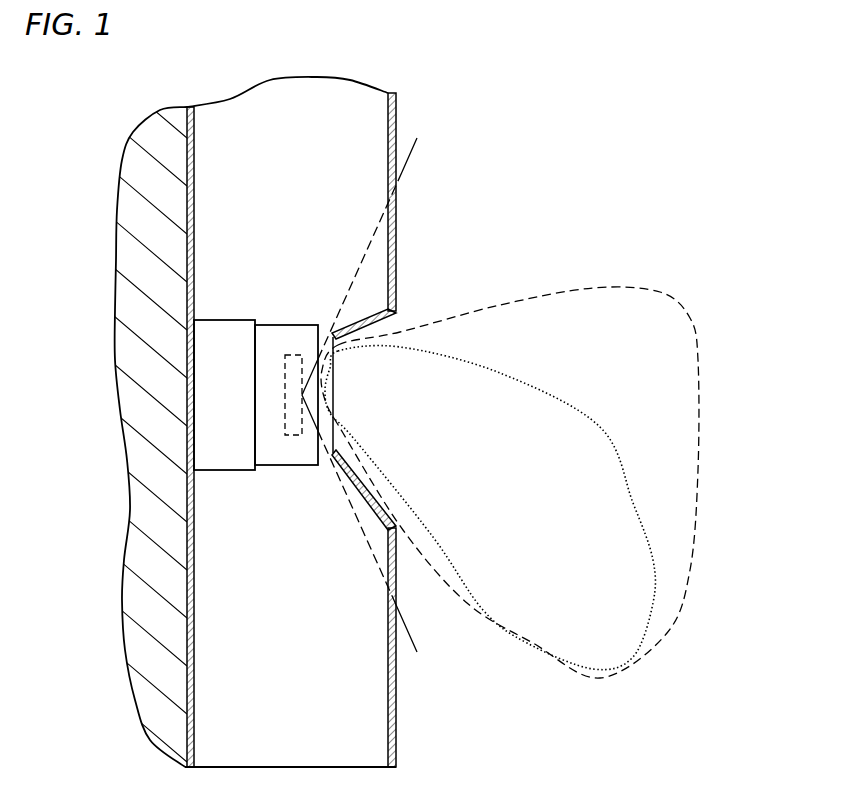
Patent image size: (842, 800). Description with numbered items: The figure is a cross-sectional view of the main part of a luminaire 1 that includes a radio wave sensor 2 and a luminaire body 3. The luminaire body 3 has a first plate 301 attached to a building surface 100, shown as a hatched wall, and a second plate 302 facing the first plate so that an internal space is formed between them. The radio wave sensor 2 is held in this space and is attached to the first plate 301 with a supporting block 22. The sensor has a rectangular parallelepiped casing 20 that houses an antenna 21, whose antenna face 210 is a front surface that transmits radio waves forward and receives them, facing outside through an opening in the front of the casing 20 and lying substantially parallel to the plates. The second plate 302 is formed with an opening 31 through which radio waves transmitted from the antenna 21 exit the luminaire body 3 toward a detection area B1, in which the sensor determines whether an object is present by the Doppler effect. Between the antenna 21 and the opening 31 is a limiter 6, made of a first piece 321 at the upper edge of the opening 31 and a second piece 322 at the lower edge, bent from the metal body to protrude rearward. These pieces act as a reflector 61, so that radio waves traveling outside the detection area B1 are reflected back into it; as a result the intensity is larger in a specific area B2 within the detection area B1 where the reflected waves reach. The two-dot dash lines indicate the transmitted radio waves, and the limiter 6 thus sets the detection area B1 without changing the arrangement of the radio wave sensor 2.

The luminaire 1 is at (473, 164).
The radio wave sensor 2 is at (256, 386).
The casing 20 is at (262, 332).
The antenna 21 is at (284, 426).
The supporting block 22 is at (215, 327).
The antenna face 210 is at (306, 438).
The luminaire body 3 is at (317, 422).
The first plate 301 is at (196, 180).
The second plate 302 is at (398, 692).
The opening 31 is at (395, 527).
The first piece 321 is at (377, 318).
The second piece 322 is at (375, 516).
The limiter 6 is at (355, 404).
The reflector 61 is at (357, 404).
The building surface 100 is at (132, 698).
The detection area B1 is at (641, 293).
The specific area B2 is at (609, 472).